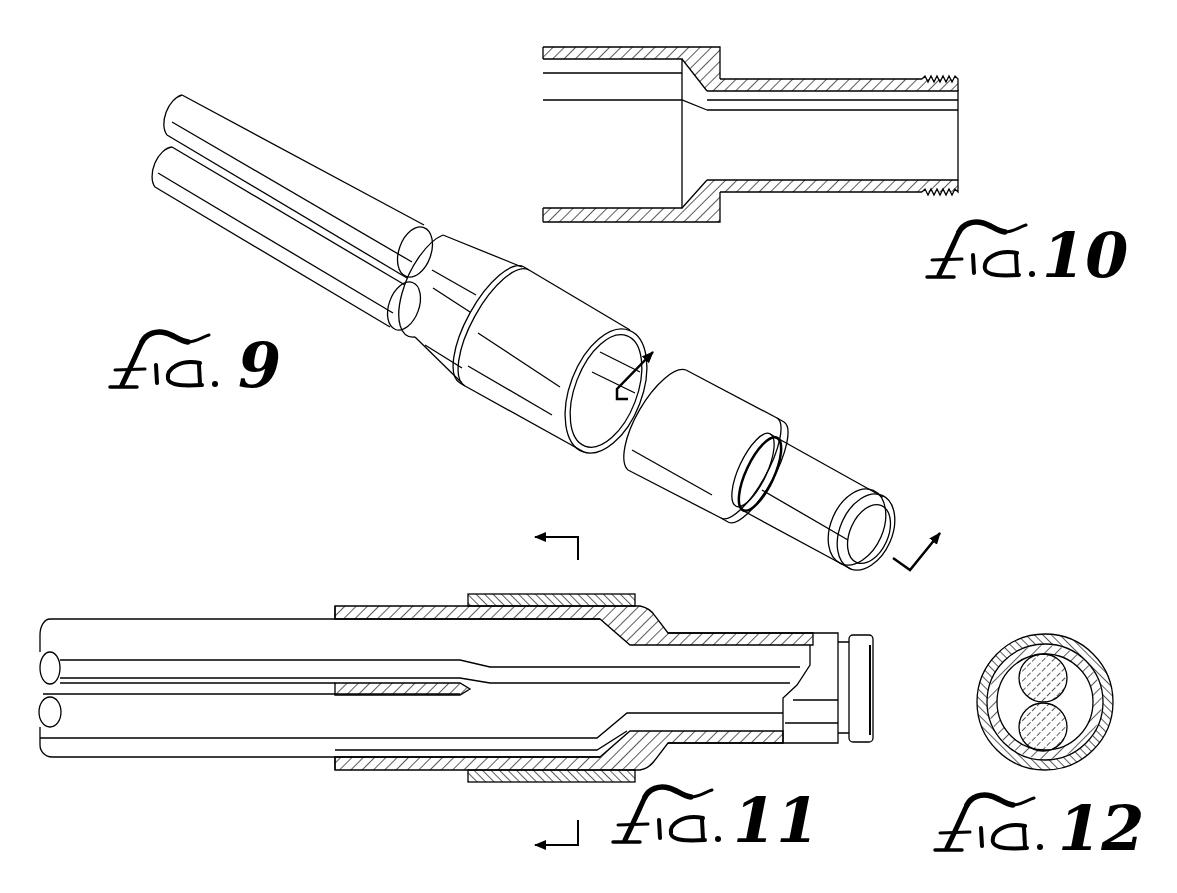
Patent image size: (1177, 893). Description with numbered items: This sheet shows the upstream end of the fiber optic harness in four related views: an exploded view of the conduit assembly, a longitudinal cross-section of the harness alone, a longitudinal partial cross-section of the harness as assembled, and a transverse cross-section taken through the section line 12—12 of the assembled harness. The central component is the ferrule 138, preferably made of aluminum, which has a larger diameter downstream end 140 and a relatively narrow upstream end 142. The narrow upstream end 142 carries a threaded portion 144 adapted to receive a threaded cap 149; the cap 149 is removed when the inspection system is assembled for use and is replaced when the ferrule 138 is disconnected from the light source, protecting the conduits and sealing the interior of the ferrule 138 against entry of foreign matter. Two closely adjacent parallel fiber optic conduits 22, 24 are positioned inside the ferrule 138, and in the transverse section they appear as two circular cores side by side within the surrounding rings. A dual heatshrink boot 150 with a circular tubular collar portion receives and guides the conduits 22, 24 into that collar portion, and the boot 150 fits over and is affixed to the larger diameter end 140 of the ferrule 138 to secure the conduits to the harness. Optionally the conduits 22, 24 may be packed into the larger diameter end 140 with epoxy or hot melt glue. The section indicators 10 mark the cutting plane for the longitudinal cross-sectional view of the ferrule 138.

In FIG. 9, the conduit 22 is at (323, 193).
In FIG. 11, the conduit 22 is at (162, 640).
In FIG. 12, the conduit 22 is at (1064, 670).
In FIG. 9, the conduit 24 is at (230, 233).
In FIG. 11, the conduit 24 is at (198, 737).
In FIG. 12, the conduit 24 is at (1062, 732).
In FIG. 9, the section line 10- 10 is at (795, 446).
In FIG. 11, the section line 12- 12 is at (533, 691).
In FIG. 9, the ferrule 138 is at (788, 462).
In FIG. 9, the larger diameter downstream end 140 is at (733, 400).
In FIG. 10, the larger diameter downstream end 140 is at (592, 223).
In FIG. 11, the larger diameter downstream end 140 is at (642, 610).
In FIG. 12, the larger diameter downstream end 140 is at (988, 738).
In FIG. 9, the narrow upstream end 142 is at (813, 470).
In FIG. 10, the narrow upstream end 142 is at (807, 193).
In FIG. 11, the narrow upstream end 142 is at (690, 632).
In FIG. 9, the threaded portion 144 is at (867, 493).
In FIG. 10, the threaded portion 144 is at (925, 77).
In FIG. 11, the threaded cap 149 is at (870, 662).
In FIG. 9, the dual heatshrink boot 150 is at (513, 402).
In FIG. 11, the dual heatshrink boot 150 is at (353, 610).
In FIG. 12, the dual heatshrink boot 150 is at (1057, 634).